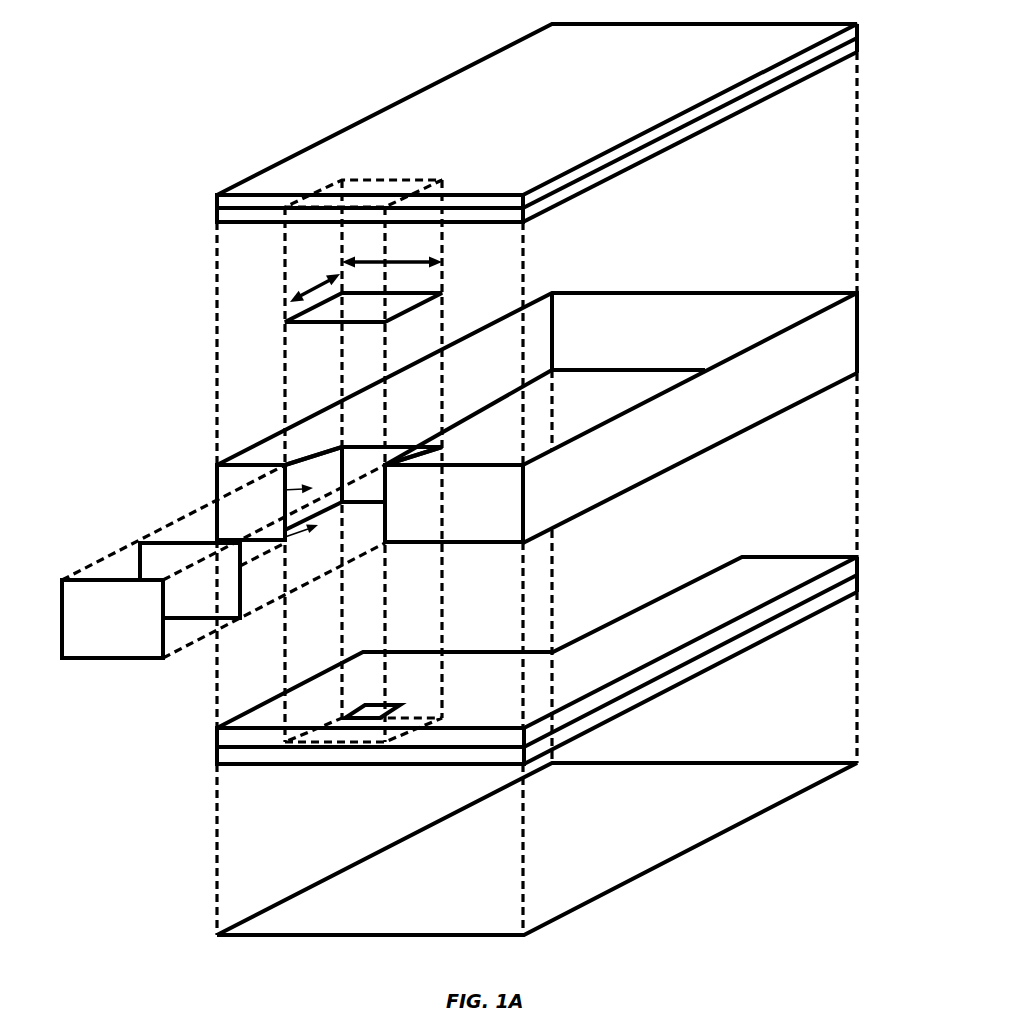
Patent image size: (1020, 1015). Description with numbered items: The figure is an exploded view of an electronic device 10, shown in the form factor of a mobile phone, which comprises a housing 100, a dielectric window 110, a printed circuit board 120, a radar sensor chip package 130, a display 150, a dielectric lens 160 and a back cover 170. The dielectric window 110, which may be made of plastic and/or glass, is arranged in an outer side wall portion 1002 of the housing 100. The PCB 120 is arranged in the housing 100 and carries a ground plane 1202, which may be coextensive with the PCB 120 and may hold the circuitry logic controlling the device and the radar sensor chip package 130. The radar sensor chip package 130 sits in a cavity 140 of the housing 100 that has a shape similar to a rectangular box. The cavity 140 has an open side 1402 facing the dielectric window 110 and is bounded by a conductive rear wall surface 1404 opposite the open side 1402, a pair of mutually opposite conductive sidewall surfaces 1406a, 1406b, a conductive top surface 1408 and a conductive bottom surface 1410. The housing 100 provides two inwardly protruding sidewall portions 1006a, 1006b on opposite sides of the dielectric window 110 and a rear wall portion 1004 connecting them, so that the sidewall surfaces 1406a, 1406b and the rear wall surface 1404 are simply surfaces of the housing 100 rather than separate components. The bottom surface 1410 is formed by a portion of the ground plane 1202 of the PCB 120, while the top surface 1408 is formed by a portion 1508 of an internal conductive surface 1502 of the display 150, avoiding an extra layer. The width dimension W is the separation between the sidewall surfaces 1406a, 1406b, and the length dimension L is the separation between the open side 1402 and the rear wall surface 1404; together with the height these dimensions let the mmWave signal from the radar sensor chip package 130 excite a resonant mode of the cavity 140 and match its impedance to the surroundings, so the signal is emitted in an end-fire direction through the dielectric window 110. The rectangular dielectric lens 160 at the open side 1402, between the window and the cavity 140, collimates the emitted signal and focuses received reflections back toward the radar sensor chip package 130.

The electronic device 10 is at (131, 88).
The housing 100 is at (753, 292).
The dielectric window 110 is at (125, 640).
The printed circuit board 120 is at (758, 570).
The radar sensor chip package 130 is at (363, 723).
The cavity 140 is at (329, 525).
The display 150 is at (408, 128).
The dielectric lens 160 is at (158, 555).
The back cover 170 is at (707, 805).
The outer wall portion 1002 is at (217, 468).
The rear wall portion 1004 is at (365, 447).
The sidewall portion 1006a is at (318, 478).
The sidewall portion 1006b is at (420, 466).
The ground plane 1202 is at (793, 605).
The open side 1402 is at (280, 465).
The rear wall surface 1404 is at (397, 455).
The sidewall surface 1406a is at (295, 467).
The sidewall surface 1406b is at (408, 458).
The top surface 1408 is at (328, 325).
The bottom surface 1410 is at (403, 718).
The conductive surface 1502 is at (683, 127).
The portion of conductive surface 1508 is at (363, 185).
The length dimension L is at (317, 275).
The width dimension W is at (403, 258).